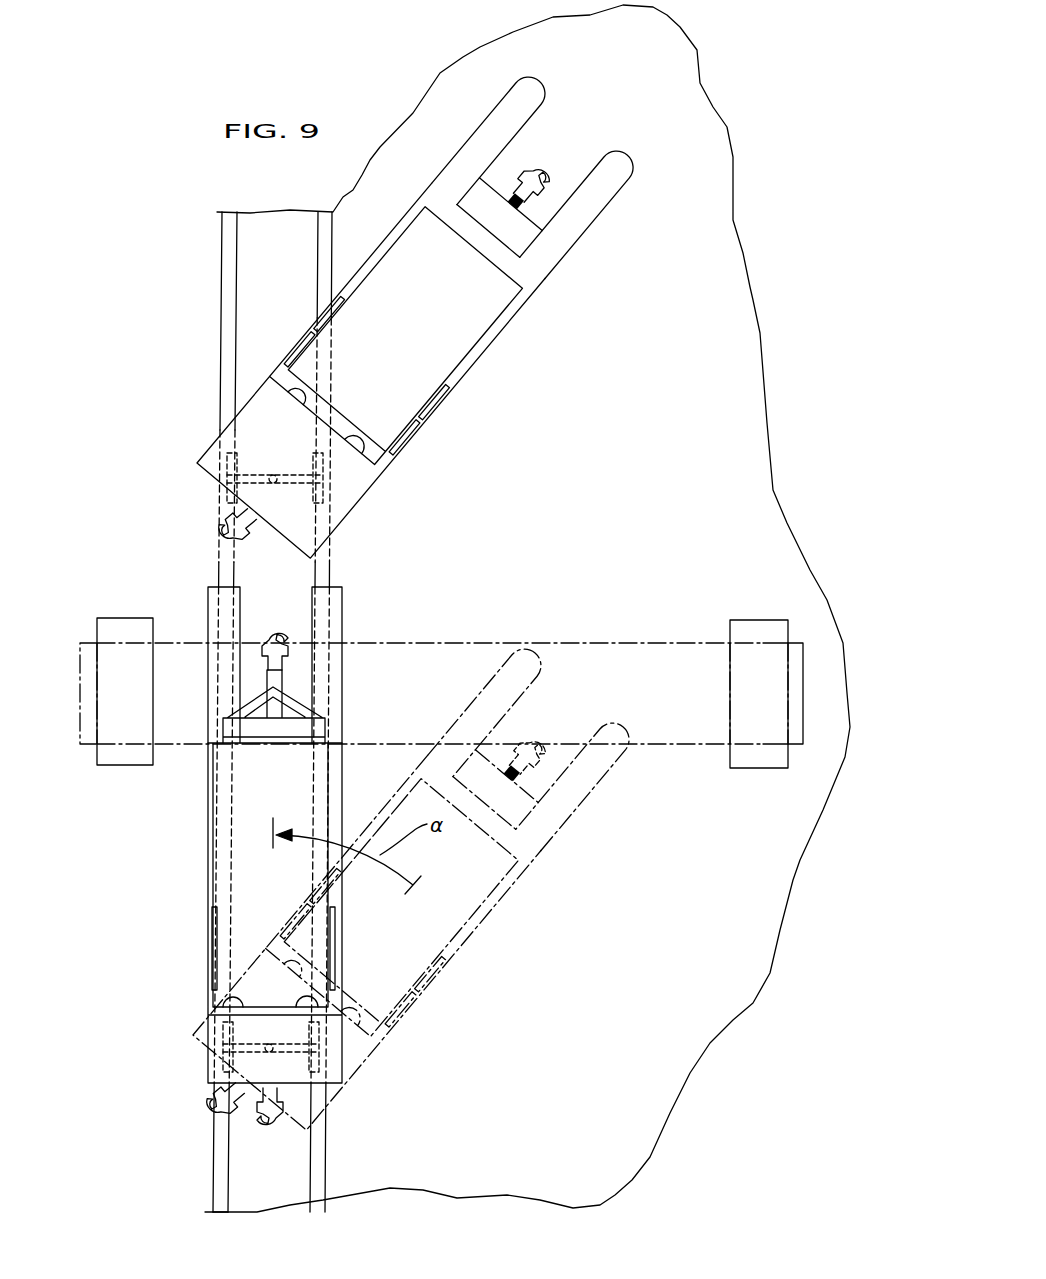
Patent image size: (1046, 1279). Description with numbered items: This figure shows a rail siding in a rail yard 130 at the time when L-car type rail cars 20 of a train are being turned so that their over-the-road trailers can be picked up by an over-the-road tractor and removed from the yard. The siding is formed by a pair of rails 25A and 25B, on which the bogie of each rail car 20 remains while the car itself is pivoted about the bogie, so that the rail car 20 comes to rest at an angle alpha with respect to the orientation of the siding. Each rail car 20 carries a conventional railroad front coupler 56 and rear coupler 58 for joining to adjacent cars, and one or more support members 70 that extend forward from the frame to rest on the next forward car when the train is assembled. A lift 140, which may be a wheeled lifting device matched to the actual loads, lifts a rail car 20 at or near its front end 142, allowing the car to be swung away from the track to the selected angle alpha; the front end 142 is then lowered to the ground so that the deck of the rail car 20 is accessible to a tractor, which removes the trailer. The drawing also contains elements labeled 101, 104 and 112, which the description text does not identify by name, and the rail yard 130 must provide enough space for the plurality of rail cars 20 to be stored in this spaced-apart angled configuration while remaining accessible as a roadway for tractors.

The rail car 20 is at (496, 341).
The rail 25A is at (330, 237).
The rail 25B is at (228, 270).
The front coupler 56 is at (553, 162).
The rear coupler 58 is at (222, 527).
The support member 70 is at (508, 92).
The track 101 is at (228, 1188).
The clamp 104 is at (225, 442).
The track channel 112 is at (297, 275).
The rail yard 130 is at (605, 508).
The lift 140 is at (122, 767).
The front end 142 is at (523, 207).